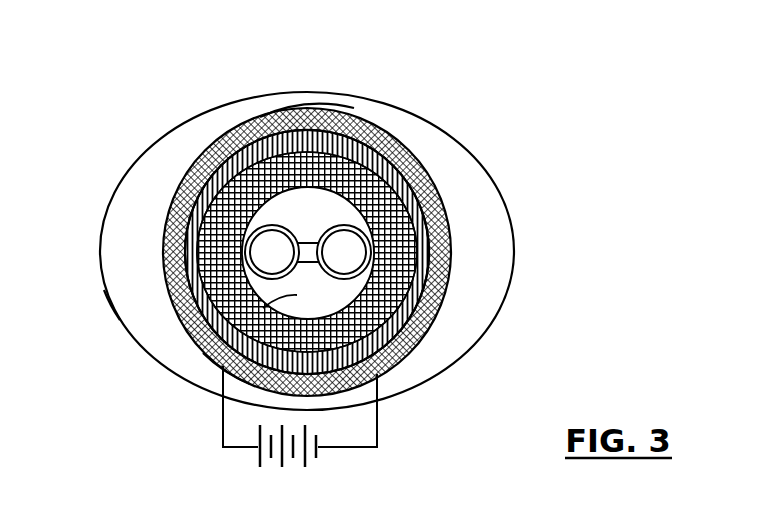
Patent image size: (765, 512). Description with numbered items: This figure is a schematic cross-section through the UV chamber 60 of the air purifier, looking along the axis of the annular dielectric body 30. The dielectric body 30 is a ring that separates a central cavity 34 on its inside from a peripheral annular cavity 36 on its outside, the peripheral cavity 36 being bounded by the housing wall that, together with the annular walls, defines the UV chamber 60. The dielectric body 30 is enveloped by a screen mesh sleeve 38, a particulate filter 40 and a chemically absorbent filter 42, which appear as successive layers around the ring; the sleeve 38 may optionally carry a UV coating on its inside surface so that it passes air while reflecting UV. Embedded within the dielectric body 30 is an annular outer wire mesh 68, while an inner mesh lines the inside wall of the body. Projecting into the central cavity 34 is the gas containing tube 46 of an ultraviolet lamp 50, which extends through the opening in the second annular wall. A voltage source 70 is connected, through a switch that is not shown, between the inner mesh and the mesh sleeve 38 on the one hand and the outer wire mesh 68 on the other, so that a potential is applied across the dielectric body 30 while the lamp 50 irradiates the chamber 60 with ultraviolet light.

The annular dielectric body 30 is at (440, 192).
The central cavity 34 is at (226, 377).
The peripheral annular cavity 36 is at (128, 253).
The screen mesh sleeve 38 is at (372, 290).
The particulate filter 40 is at (173, 195).
The chemically absorbent filter 42 is at (210, 145).
The gas containing tube 46 is at (328, 224).
The ultraviolet lamp 50 is at (423, 333).
The UV chamber 60 is at (138, 302).
The annular outer wire mesh 68 is at (353, 112).
The voltage source 70 is at (327, 430).